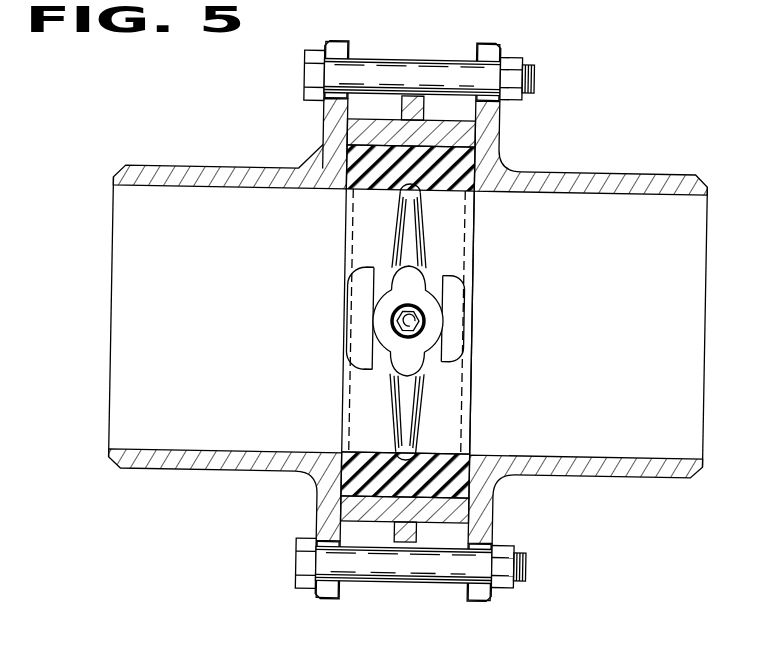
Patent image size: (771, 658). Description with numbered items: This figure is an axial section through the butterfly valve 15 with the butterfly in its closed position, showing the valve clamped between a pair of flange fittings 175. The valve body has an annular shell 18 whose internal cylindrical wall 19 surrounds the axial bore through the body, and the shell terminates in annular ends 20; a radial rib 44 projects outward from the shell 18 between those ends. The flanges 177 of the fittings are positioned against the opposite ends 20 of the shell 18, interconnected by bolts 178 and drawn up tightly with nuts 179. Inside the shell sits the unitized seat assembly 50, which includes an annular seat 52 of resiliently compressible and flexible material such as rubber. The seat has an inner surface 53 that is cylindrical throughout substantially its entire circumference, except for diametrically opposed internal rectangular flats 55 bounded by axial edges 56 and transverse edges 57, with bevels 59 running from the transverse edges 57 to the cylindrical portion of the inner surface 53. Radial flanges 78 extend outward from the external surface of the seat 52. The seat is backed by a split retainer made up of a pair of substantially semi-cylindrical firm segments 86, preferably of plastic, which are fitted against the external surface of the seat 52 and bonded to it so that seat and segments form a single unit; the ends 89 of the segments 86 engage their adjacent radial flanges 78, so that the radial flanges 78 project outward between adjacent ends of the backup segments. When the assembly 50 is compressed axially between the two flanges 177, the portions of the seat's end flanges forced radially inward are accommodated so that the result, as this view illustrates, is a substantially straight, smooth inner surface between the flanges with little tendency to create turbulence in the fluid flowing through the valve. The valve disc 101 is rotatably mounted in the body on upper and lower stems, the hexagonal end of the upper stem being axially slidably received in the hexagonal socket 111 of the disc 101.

The butterfly valve 15 is at (344, 241).
The annular shell 18 is at (467, 138).
The internal cylindrical wall 19 is at (330, 153).
The annular ends 20 is at (331, 132).
The radial rib 44 is at (412, 100).
The unitized seat assembly 50 is at (464, 246).
The annular seat 52 is at (466, 418).
The inner surface 53 is at (371, 453).
The internal rectangular flats 55 is at (433, 287).
The axial edges 56 is at (376, 269).
The transverse edges 57 is at (372, 342).
The bevels 59 is at (361, 302).
The radial flanges 78 is at (460, 203).
The semi-cylindrical firm segments 86 is at (472, 162).
The ends 89 is at (352, 196).
The valve disc 101 is at (421, 393).
The hexagonal socket 111 is at (411, 319).
The flange fittings 175 is at (198, 337).
The flanges 177 is at (330, 108).
The bolts 178 is at (383, 62).
The nuts 179 is at (505, 62).